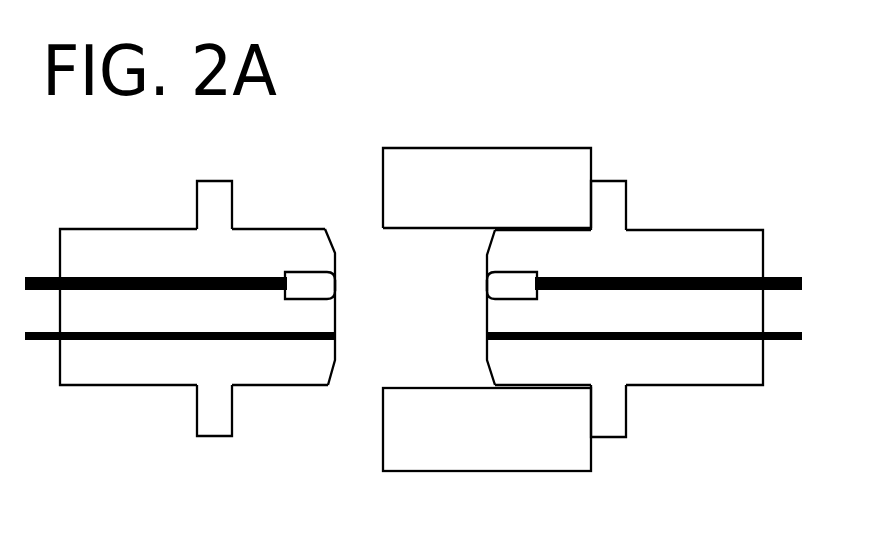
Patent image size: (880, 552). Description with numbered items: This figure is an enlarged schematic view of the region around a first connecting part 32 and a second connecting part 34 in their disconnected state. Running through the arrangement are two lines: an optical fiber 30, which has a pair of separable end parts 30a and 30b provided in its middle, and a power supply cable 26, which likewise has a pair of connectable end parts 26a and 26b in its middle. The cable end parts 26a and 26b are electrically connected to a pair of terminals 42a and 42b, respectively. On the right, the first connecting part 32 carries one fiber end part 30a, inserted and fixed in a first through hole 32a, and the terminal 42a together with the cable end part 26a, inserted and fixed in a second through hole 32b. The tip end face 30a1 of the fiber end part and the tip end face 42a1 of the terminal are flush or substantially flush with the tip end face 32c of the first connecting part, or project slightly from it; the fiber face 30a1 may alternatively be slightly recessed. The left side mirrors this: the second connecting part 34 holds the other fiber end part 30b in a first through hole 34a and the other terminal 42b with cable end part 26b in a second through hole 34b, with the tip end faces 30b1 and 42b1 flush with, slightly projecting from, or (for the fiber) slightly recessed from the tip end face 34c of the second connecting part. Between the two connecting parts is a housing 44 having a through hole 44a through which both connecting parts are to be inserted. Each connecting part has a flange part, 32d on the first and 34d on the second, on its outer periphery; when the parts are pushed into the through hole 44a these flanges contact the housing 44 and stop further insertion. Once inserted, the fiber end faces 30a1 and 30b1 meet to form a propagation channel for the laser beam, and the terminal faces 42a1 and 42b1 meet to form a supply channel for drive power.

The power supply cable 26 is at (413, 263).
The end part of power supply cable 26a is at (670, 276).
The end part of power supply cable 26b is at (240, 276).
The optical fiber 30 is at (413, 354).
The end part of optical fiber 30a is at (565, 341).
The end part of optical fiber 30b is at (97, 341).
The tip end face of end part 30a 30a1 is at (485, 337).
The tip end face of end part 30b 30b1 is at (337, 338).
The first connecting part 32 is at (600, 291).
The first through hole of first connecting part 32a is at (726, 340).
The second through hole of first connecting part 32b is at (755, 276).
The tip end face of first connecting part 32c is at (486, 318).
The flange part of first connecting part 32d is at (611, 184).
The second connecting part 34 is at (225, 292).
The first through hole of second connecting part 34a is at (172, 340).
The second through hole of second connecting part 34b is at (193, 276).
The tip end face of second connecting part 34c is at (337, 319).
The flange part of second connecting part 34d is at (217, 186).
The terminal 42a is at (515, 276).
The tip end face of terminal 42a 42a1 is at (485, 286).
The terminal 42b is at (320, 287).
The tip end face of terminal 42b 42b1 is at (338, 287).
The housing 44 is at (487, 289).
The through hole of housing 44a is at (542, 228).